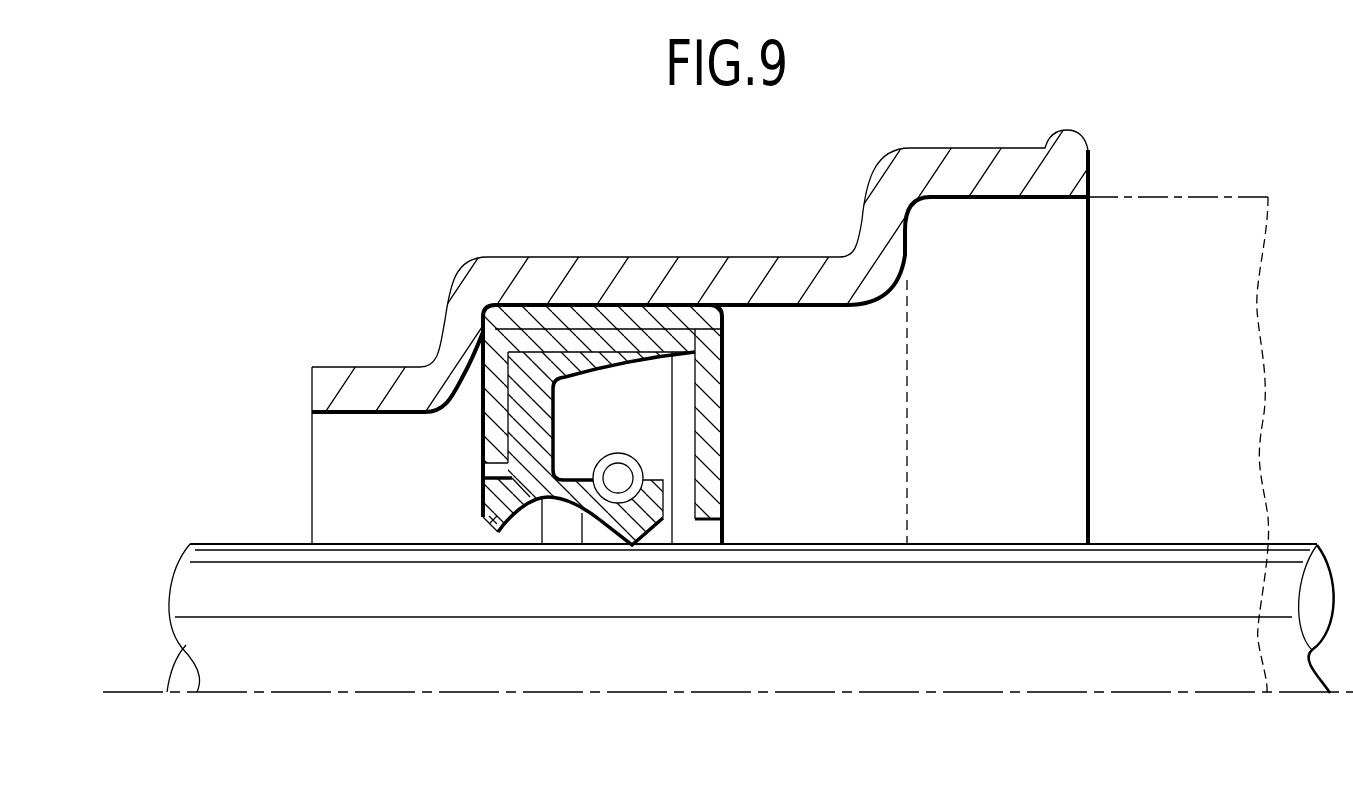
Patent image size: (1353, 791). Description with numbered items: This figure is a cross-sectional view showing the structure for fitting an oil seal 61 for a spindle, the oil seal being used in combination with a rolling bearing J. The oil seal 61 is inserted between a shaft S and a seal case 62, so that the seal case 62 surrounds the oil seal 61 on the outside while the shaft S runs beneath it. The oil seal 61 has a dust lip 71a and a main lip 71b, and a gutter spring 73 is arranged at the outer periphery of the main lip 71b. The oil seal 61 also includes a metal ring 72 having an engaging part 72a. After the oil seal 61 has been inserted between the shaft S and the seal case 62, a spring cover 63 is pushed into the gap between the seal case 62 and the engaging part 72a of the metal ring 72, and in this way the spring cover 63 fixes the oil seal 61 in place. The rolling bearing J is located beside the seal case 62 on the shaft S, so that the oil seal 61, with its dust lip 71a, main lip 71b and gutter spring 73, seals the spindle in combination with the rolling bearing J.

The oil seal 61 is at (477, 451).
The seal case 62 is at (652, 256).
The spring cover 63 is at (707, 384).
The dust lip 71a is at (493, 520).
The main lip 71b is at (648, 515).
The metal ring 72 is at (498, 327).
The engaging part 72a is at (573, 337).
The gutter spring 73 is at (582, 507).
The shaft S is at (332, 665).
The rolling bearing J is at (1177, 197).